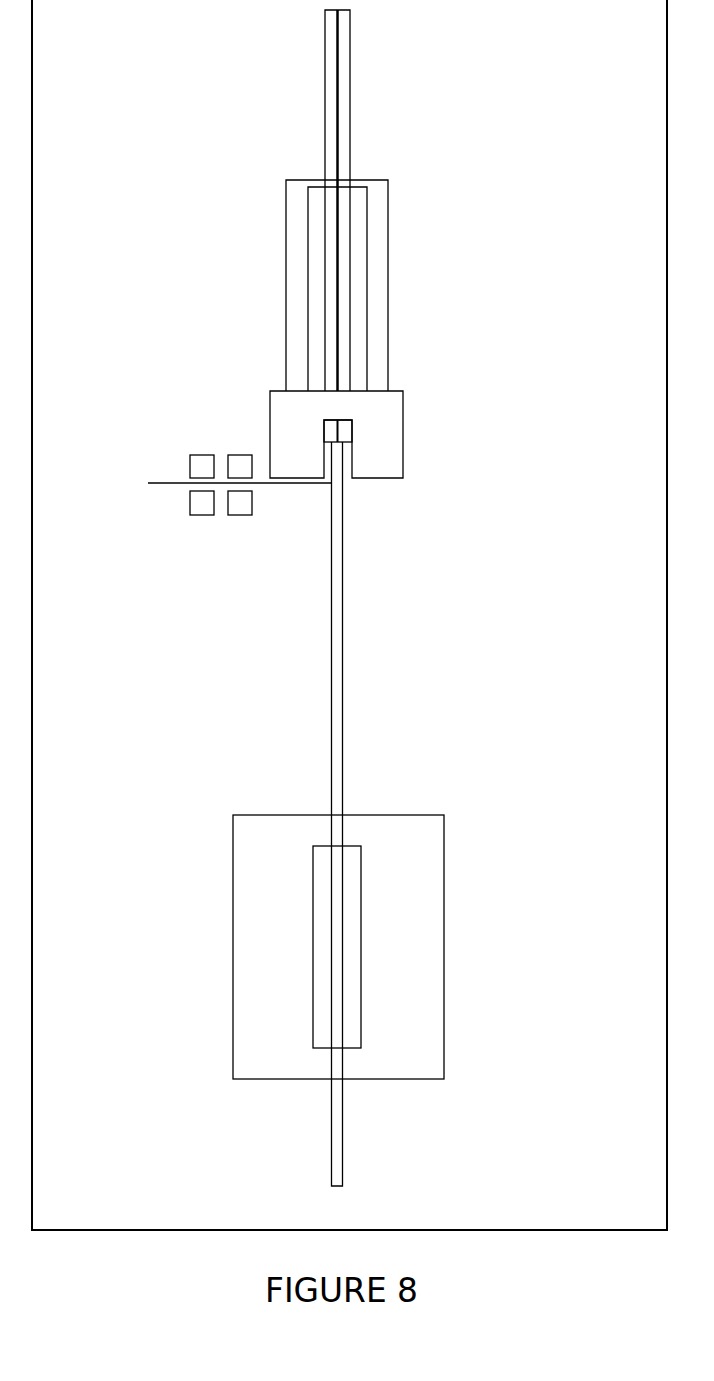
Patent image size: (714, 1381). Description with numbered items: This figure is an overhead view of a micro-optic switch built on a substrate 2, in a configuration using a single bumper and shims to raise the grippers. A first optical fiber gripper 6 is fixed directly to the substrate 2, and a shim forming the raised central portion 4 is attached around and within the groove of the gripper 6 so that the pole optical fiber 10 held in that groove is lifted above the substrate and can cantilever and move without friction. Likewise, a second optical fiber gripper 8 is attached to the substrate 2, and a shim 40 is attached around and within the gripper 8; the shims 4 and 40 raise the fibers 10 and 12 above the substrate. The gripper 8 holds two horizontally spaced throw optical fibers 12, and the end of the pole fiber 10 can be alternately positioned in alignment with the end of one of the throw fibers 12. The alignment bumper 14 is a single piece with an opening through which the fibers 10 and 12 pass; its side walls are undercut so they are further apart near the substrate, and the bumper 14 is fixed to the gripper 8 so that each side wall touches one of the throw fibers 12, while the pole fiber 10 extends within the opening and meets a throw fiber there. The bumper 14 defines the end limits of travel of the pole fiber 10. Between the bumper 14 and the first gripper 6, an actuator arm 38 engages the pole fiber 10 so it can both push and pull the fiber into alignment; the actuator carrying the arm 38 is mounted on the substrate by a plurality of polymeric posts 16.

The substrate 2 is at (517, 646).
The raised central portion (shim) 4 is at (407, 972).
The first optical fiber gripper 6 is at (320, 863).
The second optical fiber gripper 8 is at (318, 270).
The pole optical fiber 10 is at (337, 1120).
The throw optical fibers 12 is at (361, 103).
The alignment bumper 14 is at (383, 428).
The polymeric posts 16 is at (182, 463).
The arm 38 is at (160, 492).
The shim 40 is at (298, 333).